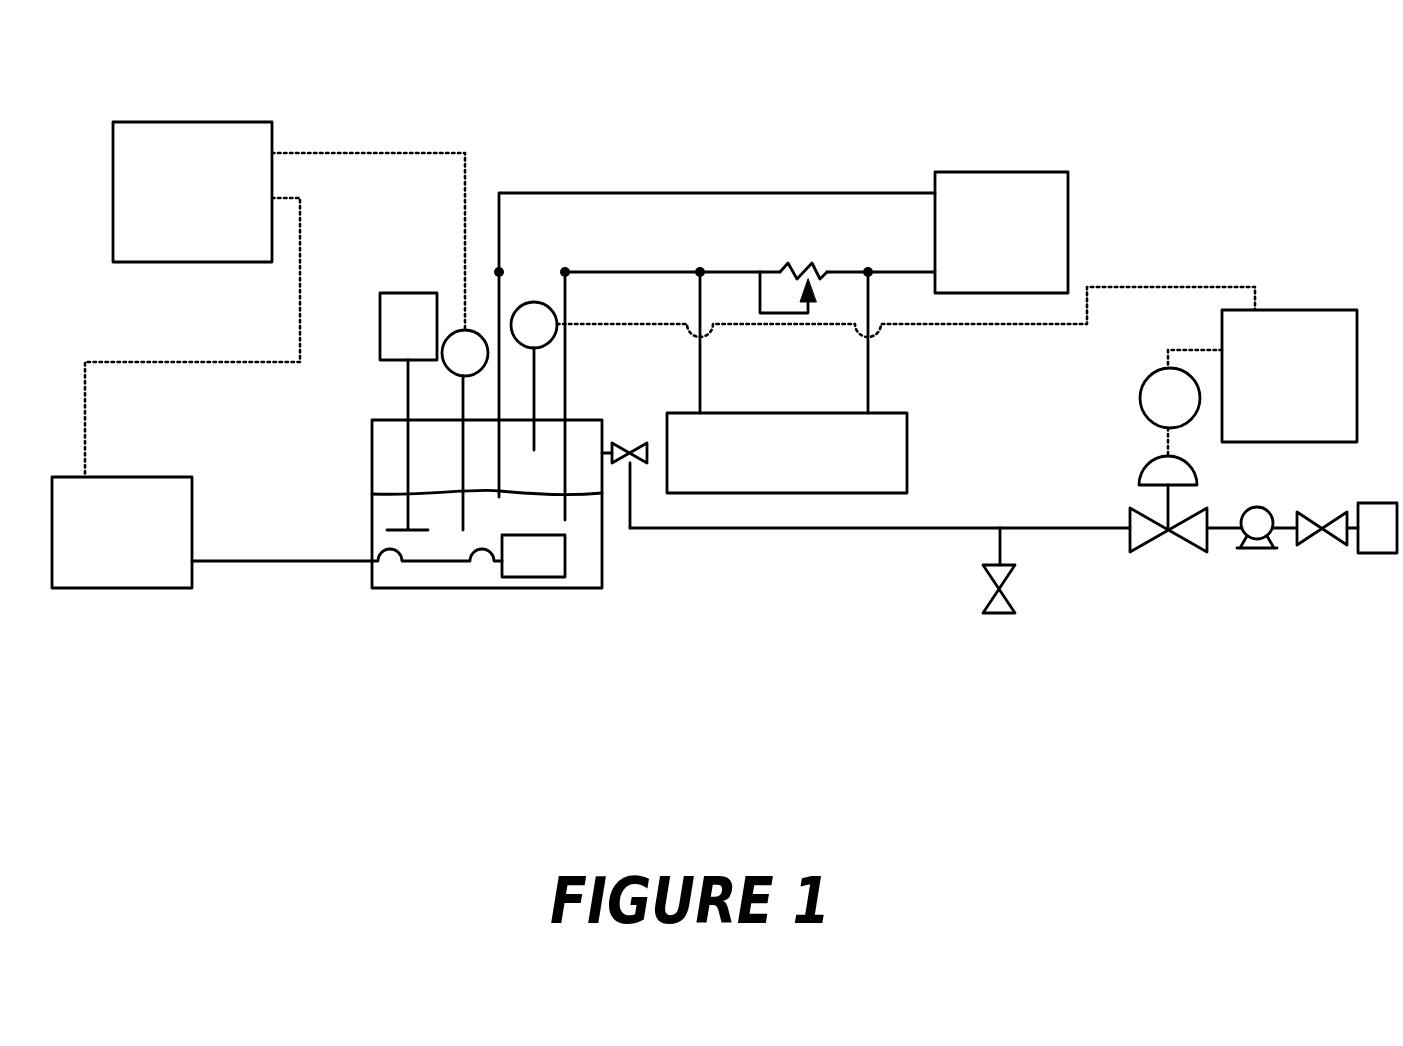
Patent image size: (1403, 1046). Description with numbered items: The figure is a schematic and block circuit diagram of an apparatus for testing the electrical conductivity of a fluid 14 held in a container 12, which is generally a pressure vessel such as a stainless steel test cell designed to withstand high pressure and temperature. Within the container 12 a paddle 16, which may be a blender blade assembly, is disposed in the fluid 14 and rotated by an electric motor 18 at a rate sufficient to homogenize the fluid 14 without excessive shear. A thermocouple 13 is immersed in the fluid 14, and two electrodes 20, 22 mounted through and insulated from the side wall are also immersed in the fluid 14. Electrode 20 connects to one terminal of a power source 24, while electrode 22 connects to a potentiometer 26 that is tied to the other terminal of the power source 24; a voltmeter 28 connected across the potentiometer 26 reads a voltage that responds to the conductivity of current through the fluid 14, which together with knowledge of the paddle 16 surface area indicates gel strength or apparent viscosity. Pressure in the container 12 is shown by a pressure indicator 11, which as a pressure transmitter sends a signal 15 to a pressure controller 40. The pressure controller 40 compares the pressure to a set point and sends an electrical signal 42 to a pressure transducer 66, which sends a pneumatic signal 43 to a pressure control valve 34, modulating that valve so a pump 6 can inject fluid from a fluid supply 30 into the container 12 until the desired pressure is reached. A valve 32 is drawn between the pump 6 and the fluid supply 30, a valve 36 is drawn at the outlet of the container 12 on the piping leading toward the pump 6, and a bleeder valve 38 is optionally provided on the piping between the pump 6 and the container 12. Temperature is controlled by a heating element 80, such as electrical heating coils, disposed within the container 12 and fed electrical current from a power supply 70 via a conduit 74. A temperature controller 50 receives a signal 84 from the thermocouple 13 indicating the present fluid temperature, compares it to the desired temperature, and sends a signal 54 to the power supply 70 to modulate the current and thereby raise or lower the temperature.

The pump 6 is at (1263, 550).
The pressure indicator 11 is at (532, 302).
The container 12 is at (372, 455).
The thermocouple 13 is at (471, 328).
The fluid 14 is at (382, 518).
The signal 15 is at (1172, 287).
The paddle 16 is at (400, 532).
The electric motor 18 is at (408, 293).
The electrode 20 is at (498, 500).
The electrode 22 is at (565, 522).
The power source 24 is at (998, 172).
The potentiometer 26 is at (806, 272).
The voltmeter 28 is at (907, 450).
The fluid supply 30 is at (1377, 528).
The outlet valve 32 is at (1322, 532).
The pressure control valve 34 is at (1193, 471).
The vessel outlet valve 36 is at (635, 448).
The bleeder valve 38 is at (993, 582).
The pressure controller 40 is at (1285, 310).
The signal 42 is at (1187, 348).
The signal 43 is at (1160, 443).
The temperature controller 50 is at (192, 122).
The signal 54 is at (302, 217).
The pressure transducer 66 is at (1142, 395).
The power supply 70 is at (122, 477).
The conduit 74 is at (283, 563).
The heating element 80 is at (532, 577).
The signal 84 is at (370, 153).